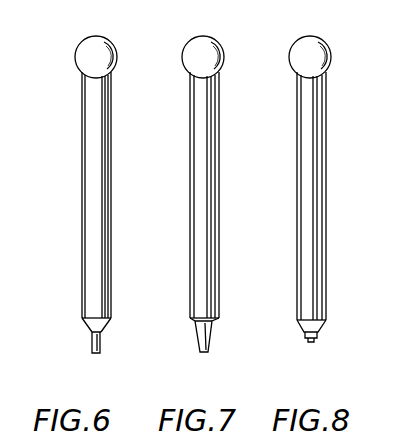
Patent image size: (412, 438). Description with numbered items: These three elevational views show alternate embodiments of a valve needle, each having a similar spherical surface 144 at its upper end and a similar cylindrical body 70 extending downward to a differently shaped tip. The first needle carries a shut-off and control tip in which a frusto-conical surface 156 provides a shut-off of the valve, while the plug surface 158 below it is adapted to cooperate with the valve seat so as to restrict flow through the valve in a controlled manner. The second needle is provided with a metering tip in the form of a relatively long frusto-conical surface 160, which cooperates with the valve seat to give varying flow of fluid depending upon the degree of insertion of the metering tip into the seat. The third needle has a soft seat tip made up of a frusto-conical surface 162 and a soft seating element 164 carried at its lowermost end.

In FIG. 6, the spherical surface 144 is at (112, 20).
In FIG. 7, the spherical surface 144 is at (223, 20).
In FIG. 8, the spherical surface 144 is at (332, 20).
In FIG. 6, the cylindrical body 70 is at (90, 196).
In FIG. 7, the cylindrical body 70 is at (200, 196).
In FIG. 8, the cylindrical body 70 is at (302, 196).
In FIG. 6, the frusto-conical surface 156 is at (91, 326).
In FIG. 6, the plug surface 158 is at (88, 350).
In FIG. 7, the frusto-conical surface 160 is at (203, 340).
In FIG. 8, the frusto-conical surface 162 is at (319, 328).
In FIG. 8, the soft seating element 164 is at (311, 342).